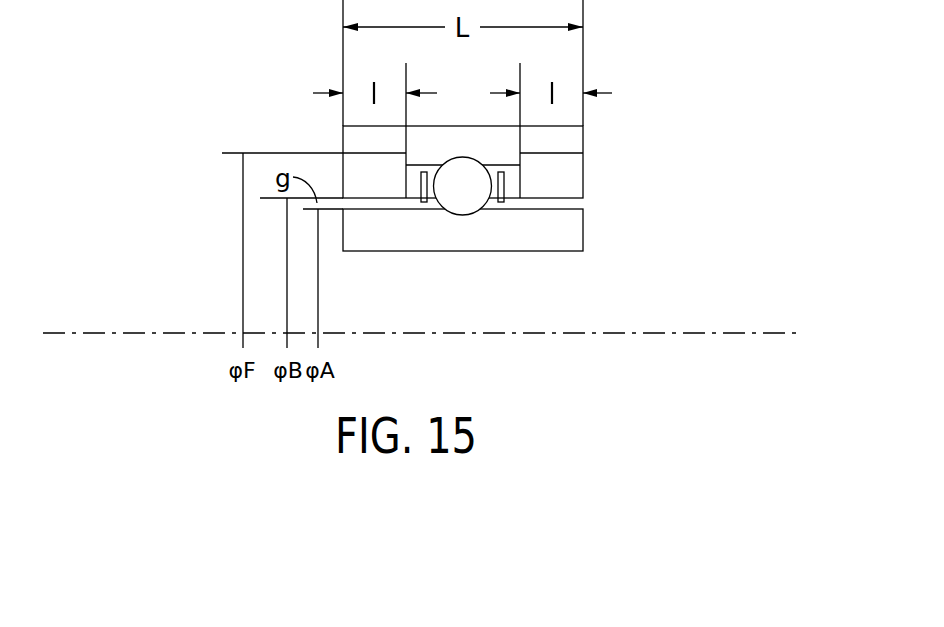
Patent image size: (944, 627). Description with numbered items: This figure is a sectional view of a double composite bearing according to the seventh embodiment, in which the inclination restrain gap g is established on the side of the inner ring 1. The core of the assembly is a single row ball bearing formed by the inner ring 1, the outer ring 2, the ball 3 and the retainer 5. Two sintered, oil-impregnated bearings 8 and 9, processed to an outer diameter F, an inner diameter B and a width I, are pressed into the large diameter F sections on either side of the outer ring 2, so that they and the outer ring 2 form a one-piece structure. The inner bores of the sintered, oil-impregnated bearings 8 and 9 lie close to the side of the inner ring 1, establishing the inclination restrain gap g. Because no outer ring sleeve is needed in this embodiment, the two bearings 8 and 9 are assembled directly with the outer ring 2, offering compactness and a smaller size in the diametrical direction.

The inner ring 1 is at (570, 243).
The outer ring 2 is at (568, 145).
The ball 3 is at (460, 206).
The retainer 5 is at (500, 201).
The sintered, oil-impregnated bearing 8 is at (364, 186).
The sintered, oil-impregnated bearing 9 is at (567, 185).